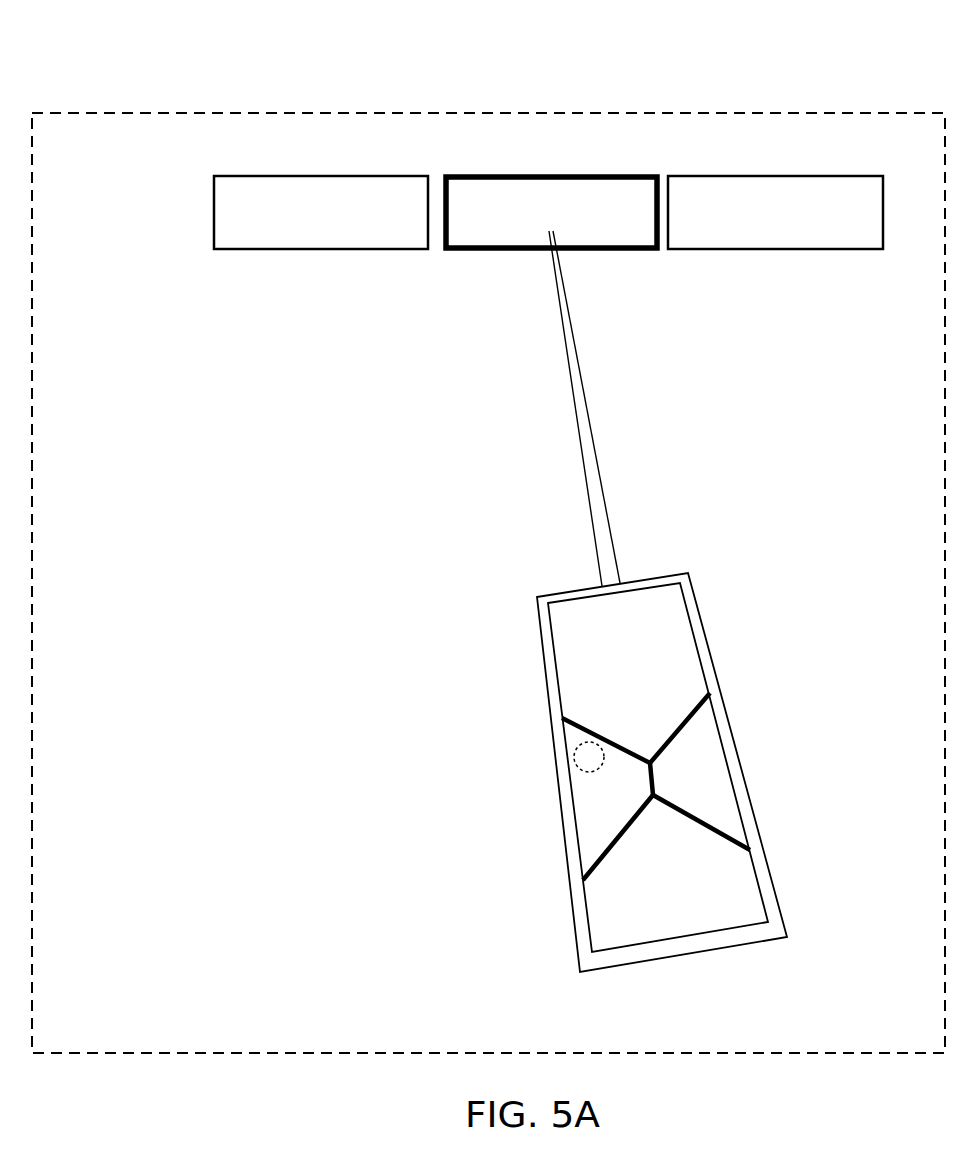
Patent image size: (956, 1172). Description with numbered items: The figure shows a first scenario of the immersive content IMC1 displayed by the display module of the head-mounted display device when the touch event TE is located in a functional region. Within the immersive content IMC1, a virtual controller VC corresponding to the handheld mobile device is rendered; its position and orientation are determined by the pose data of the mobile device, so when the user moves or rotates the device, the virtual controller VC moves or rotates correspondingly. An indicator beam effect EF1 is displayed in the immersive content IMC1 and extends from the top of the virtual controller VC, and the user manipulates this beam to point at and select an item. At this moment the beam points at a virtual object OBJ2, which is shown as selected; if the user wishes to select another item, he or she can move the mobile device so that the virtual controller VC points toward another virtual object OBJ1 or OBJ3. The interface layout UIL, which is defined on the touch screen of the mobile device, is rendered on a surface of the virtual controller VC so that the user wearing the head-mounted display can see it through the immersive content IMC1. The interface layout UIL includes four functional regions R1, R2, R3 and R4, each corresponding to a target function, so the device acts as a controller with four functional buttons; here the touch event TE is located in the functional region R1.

The immersive content IMC1 is at (808, 112).
The virtual object OBJ1 is at (351, 225).
The virtual object OBJ2 is at (580, 225).
The virtual object OBJ3 is at (804, 225).
The indicator beam effect EF1 is at (602, 490).
The virtual controller VC is at (700, 615).
The interface layout UIL is at (701, 654).
The functional region R1 is at (622, 796).
The functional region R2 is at (709, 779).
The functional region R3 is at (644, 667).
The functional region R4 is at (686, 899).
The touch event TE is at (583, 769).